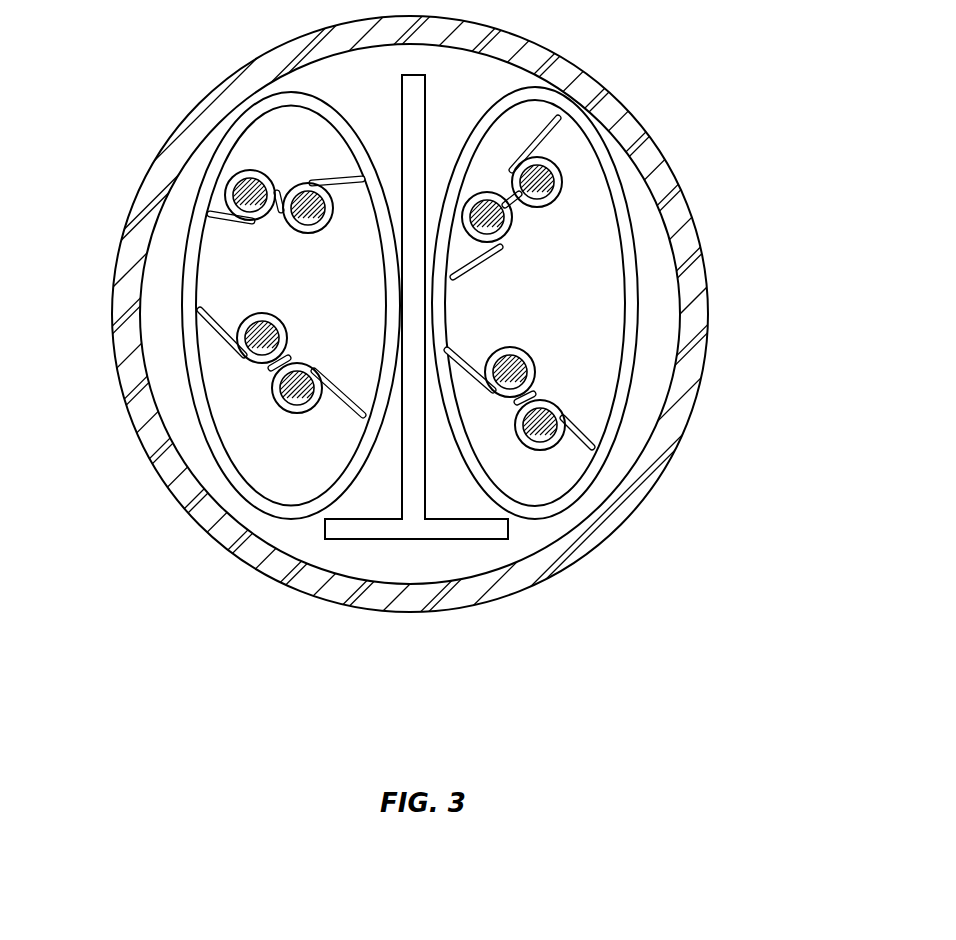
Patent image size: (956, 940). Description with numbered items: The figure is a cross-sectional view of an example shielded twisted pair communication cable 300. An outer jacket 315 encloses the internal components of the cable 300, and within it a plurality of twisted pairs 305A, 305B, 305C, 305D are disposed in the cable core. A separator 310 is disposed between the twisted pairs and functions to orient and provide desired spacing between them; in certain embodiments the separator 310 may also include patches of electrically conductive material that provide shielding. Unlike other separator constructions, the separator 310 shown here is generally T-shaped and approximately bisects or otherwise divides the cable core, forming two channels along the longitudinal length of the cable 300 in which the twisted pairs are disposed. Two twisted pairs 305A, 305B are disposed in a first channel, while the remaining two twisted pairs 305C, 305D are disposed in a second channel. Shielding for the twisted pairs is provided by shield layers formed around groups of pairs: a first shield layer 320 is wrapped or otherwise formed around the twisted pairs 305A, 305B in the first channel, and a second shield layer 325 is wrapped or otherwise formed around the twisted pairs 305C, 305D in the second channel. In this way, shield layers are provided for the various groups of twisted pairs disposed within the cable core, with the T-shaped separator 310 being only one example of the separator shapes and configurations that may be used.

The shielded twisted pair communication cable 300 is at (225, 625).
The outer jacket 315 is at (598, 93).
The first shield layer 320 is at (627, 422).
The second shield layer 325 is at (180, 350).
The separator 310 is at (452, 540).
The twisted pair 305A is at (568, 186).
The twisted pair 305B is at (508, 436).
The twisted pair 305C is at (230, 398).
The twisted pair 305D is at (326, 168).